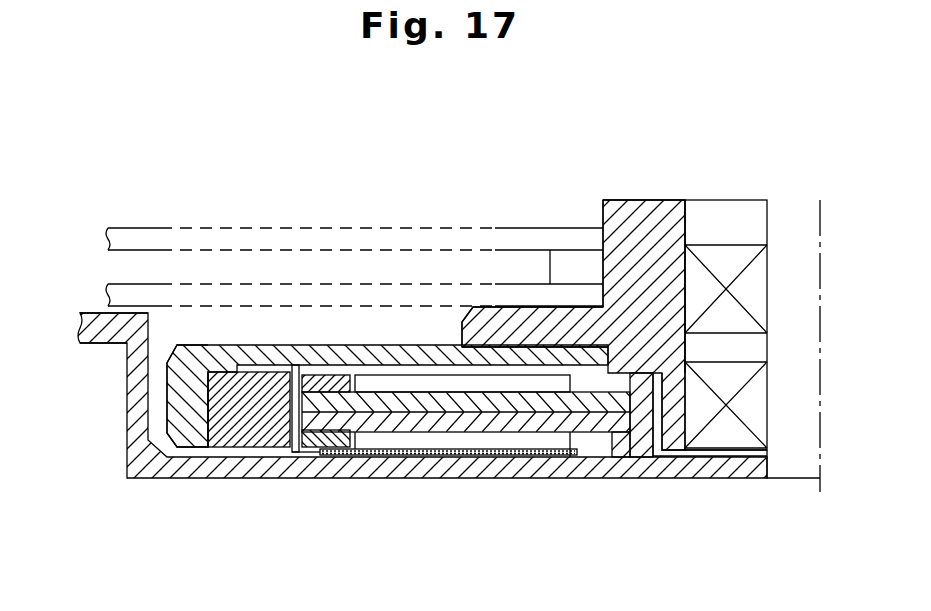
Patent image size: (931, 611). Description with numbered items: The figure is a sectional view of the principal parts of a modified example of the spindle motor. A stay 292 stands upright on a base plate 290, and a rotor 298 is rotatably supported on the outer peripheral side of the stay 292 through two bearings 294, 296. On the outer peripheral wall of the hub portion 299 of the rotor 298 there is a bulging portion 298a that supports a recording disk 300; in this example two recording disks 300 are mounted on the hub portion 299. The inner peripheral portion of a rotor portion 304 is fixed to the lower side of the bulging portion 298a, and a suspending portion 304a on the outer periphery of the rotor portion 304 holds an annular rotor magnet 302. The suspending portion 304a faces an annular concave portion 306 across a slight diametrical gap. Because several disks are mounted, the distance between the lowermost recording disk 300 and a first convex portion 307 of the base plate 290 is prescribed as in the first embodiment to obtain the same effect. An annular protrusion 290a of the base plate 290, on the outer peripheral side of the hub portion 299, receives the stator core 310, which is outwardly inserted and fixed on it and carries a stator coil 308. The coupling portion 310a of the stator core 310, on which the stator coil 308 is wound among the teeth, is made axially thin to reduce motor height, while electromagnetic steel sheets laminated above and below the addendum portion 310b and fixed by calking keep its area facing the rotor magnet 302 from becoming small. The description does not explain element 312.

The base plate 290 is at (634, 463).
The annular protrusion 290a is at (645, 407).
The stay 292 is at (789, 457).
The bearing 294 is at (723, 263).
The bearing 296 is at (720, 443).
The rotor 298 is at (597, 194).
The bulging portion 298a is at (527, 315).
The hub portion 299 is at (640, 243).
The recording disk 300 is at (262, 226).
The rotor magnet 302 is at (249, 427).
The rotor portion 304 is at (248, 352).
The suspending portion 304a is at (173, 413).
The annular concave portion 306 is at (188, 456).
The first convex portion 307 is at (98, 341).
The stator coil 308 is at (477, 437).
The stator core 310 is at (582, 433).
The coupling portion 310a is at (425, 433).
The addendum portion 310b is at (300, 455).
The spacer 312 is at (317, 372).